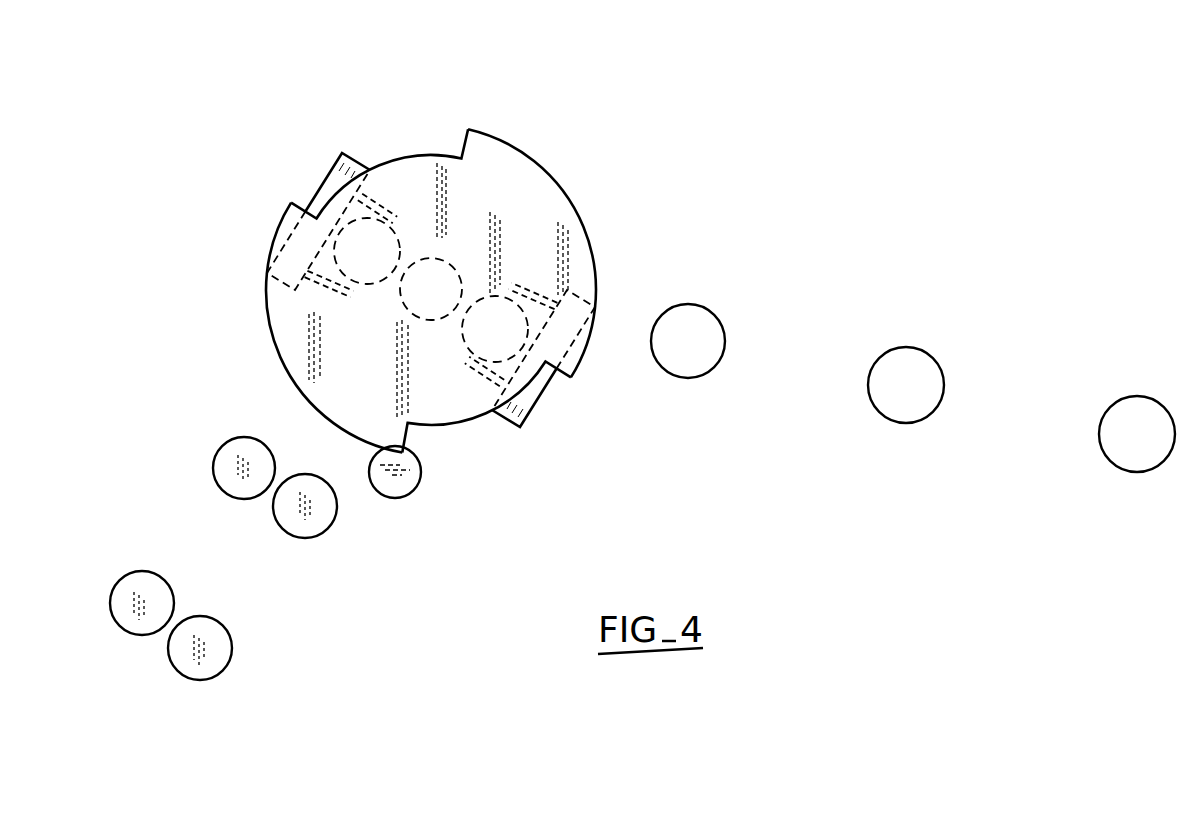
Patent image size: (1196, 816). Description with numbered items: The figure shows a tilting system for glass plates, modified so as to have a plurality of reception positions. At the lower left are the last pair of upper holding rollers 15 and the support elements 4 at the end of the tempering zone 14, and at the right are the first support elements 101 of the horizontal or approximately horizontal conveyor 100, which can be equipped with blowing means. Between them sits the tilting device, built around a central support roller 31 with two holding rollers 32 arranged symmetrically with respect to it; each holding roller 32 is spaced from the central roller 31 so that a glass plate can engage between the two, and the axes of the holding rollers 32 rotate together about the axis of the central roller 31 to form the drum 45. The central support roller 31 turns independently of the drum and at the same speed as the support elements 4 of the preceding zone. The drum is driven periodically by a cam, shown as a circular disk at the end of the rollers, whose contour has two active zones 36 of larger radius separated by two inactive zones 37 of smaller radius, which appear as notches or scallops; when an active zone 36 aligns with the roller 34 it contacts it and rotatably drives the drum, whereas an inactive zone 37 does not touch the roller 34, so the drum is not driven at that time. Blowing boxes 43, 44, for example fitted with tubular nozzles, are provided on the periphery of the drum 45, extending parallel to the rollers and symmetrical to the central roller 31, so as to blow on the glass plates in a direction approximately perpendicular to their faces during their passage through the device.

The support elements 4 is at (310, 519).
The tempering zone 14 is at (210, 423).
The upper holding rollers 15 is at (229, 477).
The central support roller 31 is at (445, 302).
The holding rollers 32 is at (381, 261).
The roller 34 is at (410, 483).
The active zones 36 is at (552, 176).
The inactive zones 37 is at (415, 156).
The blowing box 43 is at (326, 178).
The blowing box 44 is at (571, 309).
The drum 45 is at (511, 116).
The horizontal conveyor 100 is at (1175, 373).
The support elements 101 is at (692, 355).